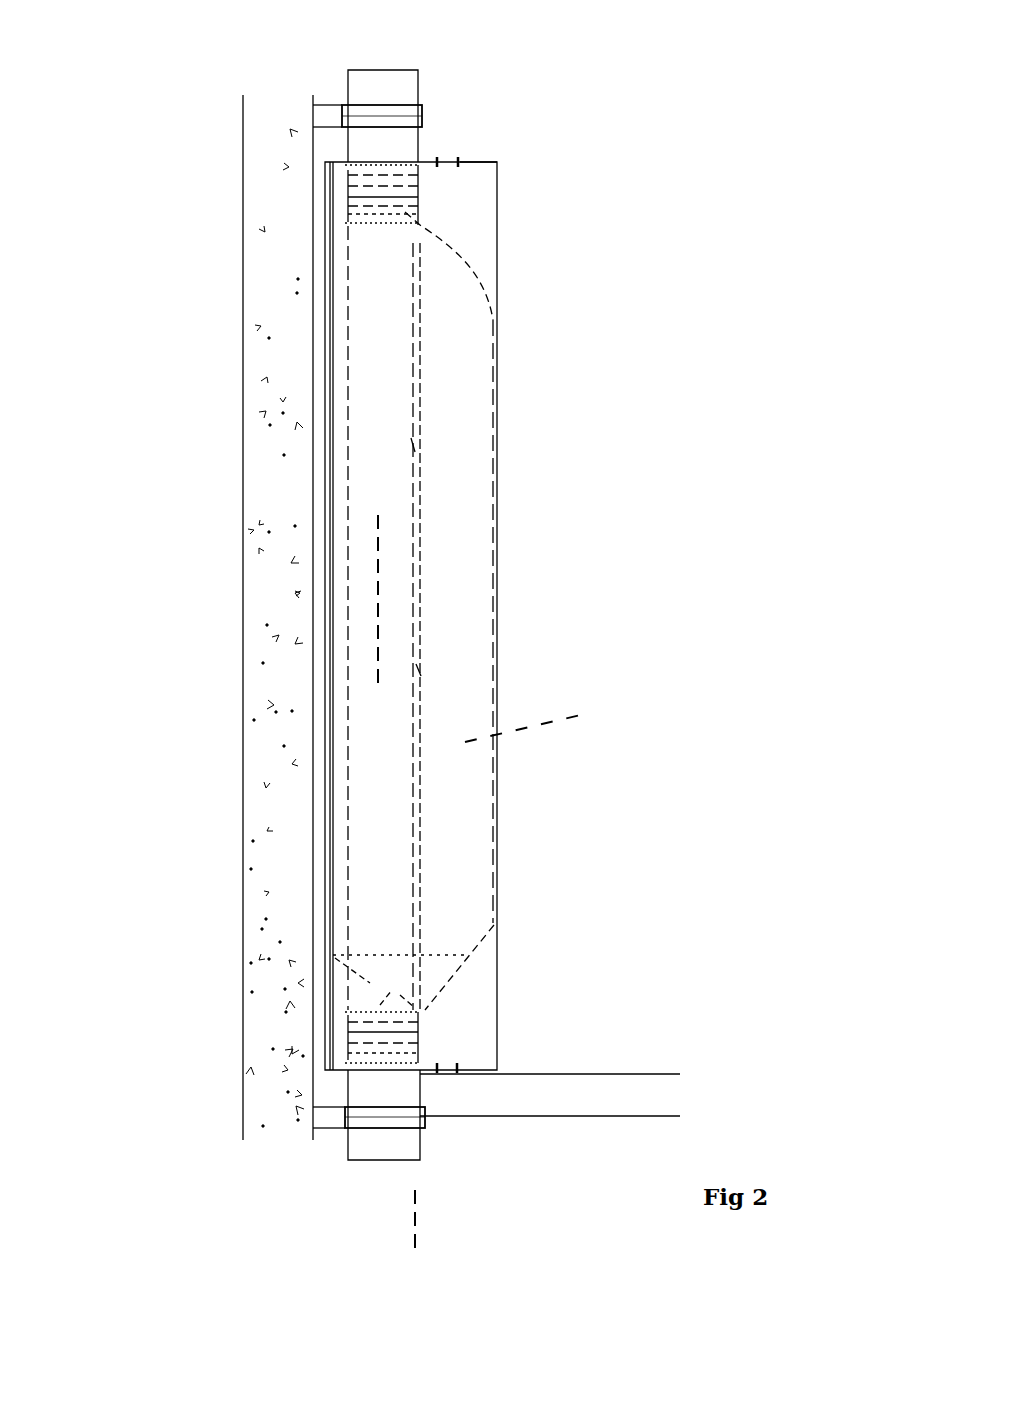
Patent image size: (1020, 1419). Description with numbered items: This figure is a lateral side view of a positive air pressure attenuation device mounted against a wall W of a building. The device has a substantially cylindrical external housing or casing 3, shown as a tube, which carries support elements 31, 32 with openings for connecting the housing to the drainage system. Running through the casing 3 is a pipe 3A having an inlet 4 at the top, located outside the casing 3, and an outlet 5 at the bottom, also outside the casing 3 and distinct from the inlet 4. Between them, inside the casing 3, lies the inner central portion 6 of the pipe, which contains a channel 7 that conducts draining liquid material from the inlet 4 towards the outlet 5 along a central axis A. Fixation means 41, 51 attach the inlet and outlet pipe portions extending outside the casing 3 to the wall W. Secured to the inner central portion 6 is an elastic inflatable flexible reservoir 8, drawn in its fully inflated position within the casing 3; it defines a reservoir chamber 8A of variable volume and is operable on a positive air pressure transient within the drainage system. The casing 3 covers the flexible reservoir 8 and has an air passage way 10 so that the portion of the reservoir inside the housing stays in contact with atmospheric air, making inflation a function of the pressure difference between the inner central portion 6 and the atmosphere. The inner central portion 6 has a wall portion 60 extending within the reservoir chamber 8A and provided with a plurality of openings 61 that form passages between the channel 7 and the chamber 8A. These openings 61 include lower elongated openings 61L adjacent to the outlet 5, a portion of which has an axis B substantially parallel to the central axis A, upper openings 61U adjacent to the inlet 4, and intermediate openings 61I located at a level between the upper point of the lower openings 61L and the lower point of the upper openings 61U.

The external housing or casing 3 is at (497, 420).
The pipe 3A is at (405, 142).
The inlet 4 is at (405, 85).
The outlet 5 is at (415, 1150).
The inner central portion 6 is at (420, 492).
The channel 7 is at (382, 788).
The elastic inflatable flexible reservoir 8 is at (497, 538).
The reservoir chamber 8A is at (560, 712).
The air passage way 10 is at (452, 162).
The support element 31 is at (475, 1067).
The support element 32 is at (473, 163).
The fixation means 41 is at (313, 127).
The fixation means 51 is at (335, 1112).
The wall portion 60 is at (422, 372).
The openings 61 is at (420, 670).
The intermediate openings 61I is at (413, 445).
The upper openings 61U is at (415, 251).
The lower elongated openings 61L is at (410, 986).
The central axis A is at (375, 615).
The axis B is at (418, 1238).
The wall W is at (255, 815).